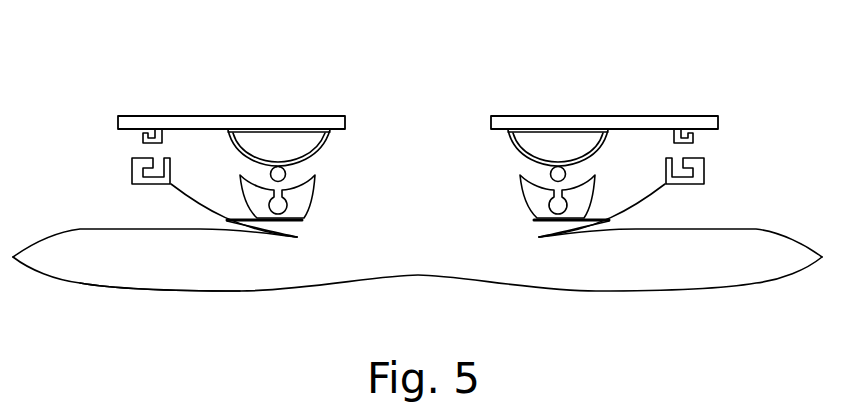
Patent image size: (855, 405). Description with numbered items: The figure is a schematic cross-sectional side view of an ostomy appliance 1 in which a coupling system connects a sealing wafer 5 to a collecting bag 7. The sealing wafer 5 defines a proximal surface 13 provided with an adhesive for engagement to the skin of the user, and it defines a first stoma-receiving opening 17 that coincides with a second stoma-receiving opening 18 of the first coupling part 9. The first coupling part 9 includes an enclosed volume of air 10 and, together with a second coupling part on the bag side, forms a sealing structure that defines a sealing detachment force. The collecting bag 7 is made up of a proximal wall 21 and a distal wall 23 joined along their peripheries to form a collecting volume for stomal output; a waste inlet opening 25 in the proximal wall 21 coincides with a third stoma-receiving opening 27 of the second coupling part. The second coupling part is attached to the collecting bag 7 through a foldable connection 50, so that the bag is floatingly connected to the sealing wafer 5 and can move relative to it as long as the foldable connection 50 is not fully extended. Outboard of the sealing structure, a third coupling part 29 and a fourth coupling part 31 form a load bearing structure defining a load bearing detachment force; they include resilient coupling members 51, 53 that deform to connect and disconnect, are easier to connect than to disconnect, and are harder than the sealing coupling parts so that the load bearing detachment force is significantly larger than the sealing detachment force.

The ostomy appliance 1 is at (417, 270).
The sealing wafer 5 is at (125, 131).
The collecting bag 7 is at (123, 305).
The first coupling part 9 is at (228, 130).
The enclosed volume of air 10 is at (278, 147).
The proximal surface 13 is at (638, 117).
The first stoma-receiving opening 17 is at (458, 70).
The second stoma-receiving opening 18 is at (432, 122).
The proximal wall 21 is at (72, 230).
The distal wall 23 is at (235, 293).
The waste inlet opening 25 is at (556, 283).
The third stoma-receiving opening 27 is at (327, 237).
The third coupling part 29 is at (745, 141).
The fourth coupling part 31 is at (741, 173).
The foldable connection 50 is at (539, 237).
The resilient coupling member 51 is at (694, 138).
The resilient coupling member 53 is at (704, 170).